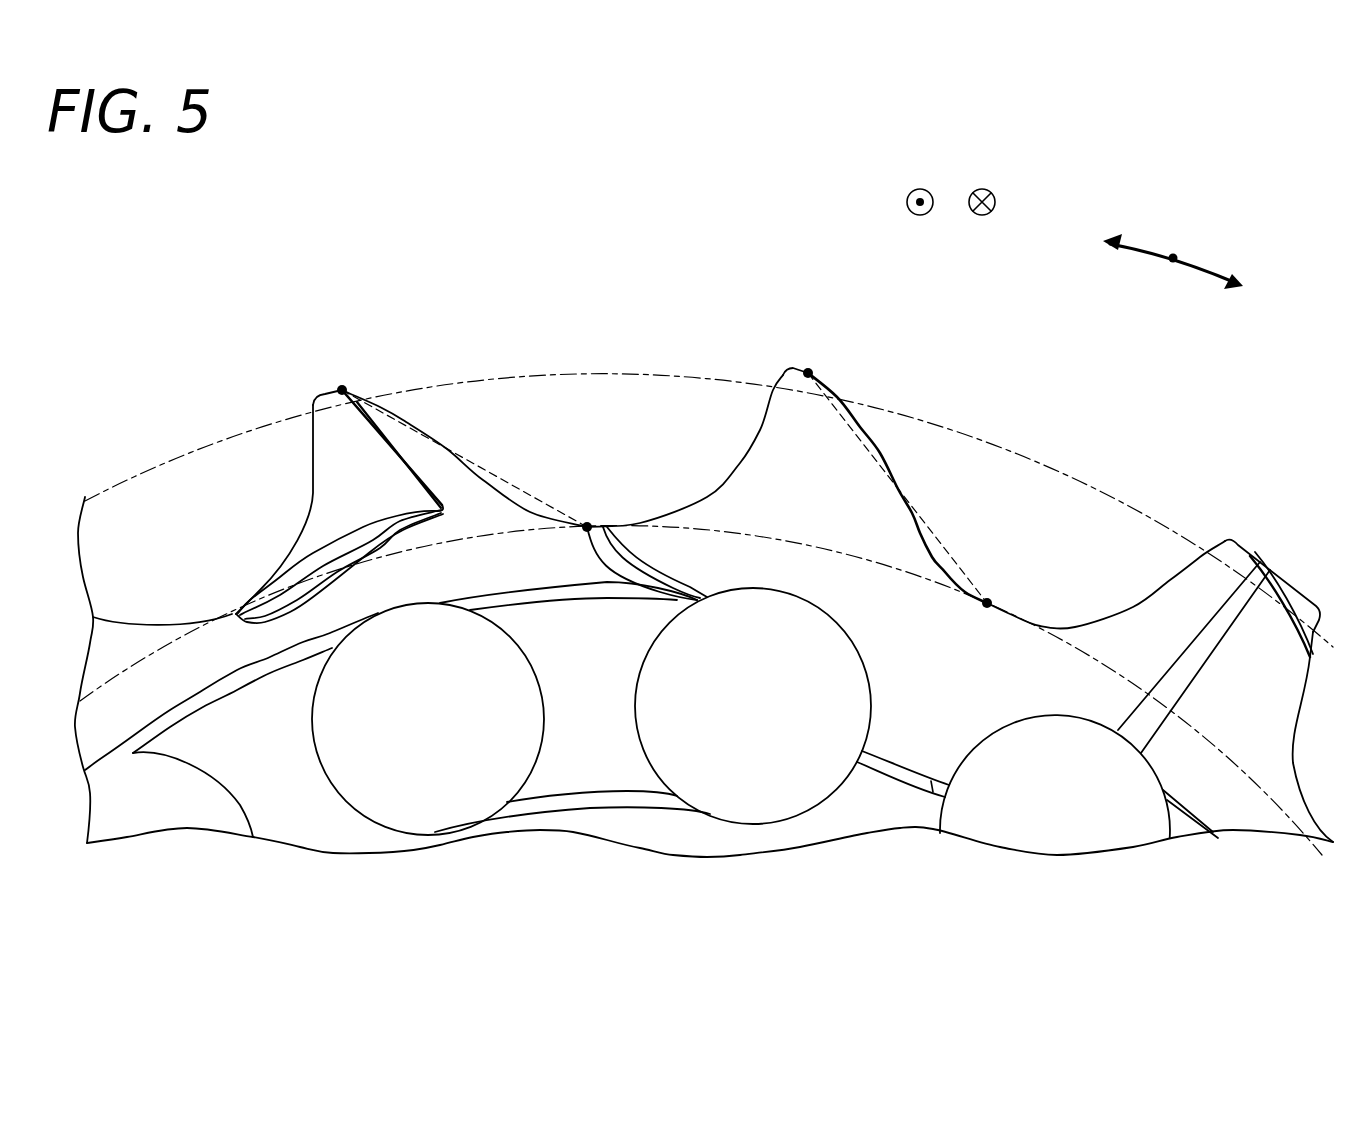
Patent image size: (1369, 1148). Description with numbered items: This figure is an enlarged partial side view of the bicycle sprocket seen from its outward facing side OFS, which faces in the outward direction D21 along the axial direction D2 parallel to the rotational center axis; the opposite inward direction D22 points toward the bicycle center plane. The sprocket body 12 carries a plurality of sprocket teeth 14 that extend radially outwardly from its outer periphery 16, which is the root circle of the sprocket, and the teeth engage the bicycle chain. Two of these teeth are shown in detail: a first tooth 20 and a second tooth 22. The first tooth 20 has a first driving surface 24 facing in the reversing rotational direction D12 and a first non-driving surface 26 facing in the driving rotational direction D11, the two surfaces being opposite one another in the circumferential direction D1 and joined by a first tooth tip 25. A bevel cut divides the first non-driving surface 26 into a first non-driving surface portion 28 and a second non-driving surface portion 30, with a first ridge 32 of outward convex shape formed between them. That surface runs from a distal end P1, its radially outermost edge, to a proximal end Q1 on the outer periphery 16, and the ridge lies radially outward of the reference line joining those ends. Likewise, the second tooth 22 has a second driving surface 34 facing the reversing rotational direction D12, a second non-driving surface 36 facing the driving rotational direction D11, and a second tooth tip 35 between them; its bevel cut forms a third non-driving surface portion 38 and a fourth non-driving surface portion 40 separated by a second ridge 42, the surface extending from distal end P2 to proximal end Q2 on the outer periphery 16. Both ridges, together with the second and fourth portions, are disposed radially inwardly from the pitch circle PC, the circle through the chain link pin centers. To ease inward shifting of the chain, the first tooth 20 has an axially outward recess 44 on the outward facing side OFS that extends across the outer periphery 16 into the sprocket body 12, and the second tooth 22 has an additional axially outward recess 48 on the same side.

The sprocket body 12 is at (1010, 697).
The sprocket teeth 14 is at (1289, 578).
The outer periphery 16 is at (1265, 830).
The first tooth 20 is at (925, 273).
The second tooth 22 is at (500, 273).
The first driving surface 24 is at (760, 437).
The first tooth tip 25 is at (788, 368).
The first non-driving surface 26 is at (978, 312).
The first non-driving surface portion 28 is at (836, 394).
The second non-driving surface portion 30 is at (938, 562).
The first ridge 32 is at (895, 487).
The second driving surface 34 is at (313, 477).
The second tooth tip 35 is at (310, 400).
The second non-driving surface 36 is at (550, 312).
The third non-driving surface portion 38 is at (398, 418).
The fourth non-driving surface portion 40 is at (482, 475).
The second ridge 42 is at (437, 445).
The axially outward recess 44 is at (830, 513).
The additional axially outward recess 48 is at (367, 477).
The outward facing side OFS is at (597, 762).
The pitch circle PC is at (1163, 523).
The distal end P1 is at (818, 360).
The distal end P2 is at (350, 375).
The proximal end Q1 is at (1000, 588).
The proximal end Q2 is at (594, 512).
The circumferential direction D1 is at (1278, 178).
The driving rotational direction D11 is at (1210, 265).
The reversing rotational direction D12 is at (1151, 247).
The axial direction D2 is at (977, 120).
The outward direction D21 is at (981, 188).
The inward direction D22 is at (919, 188).